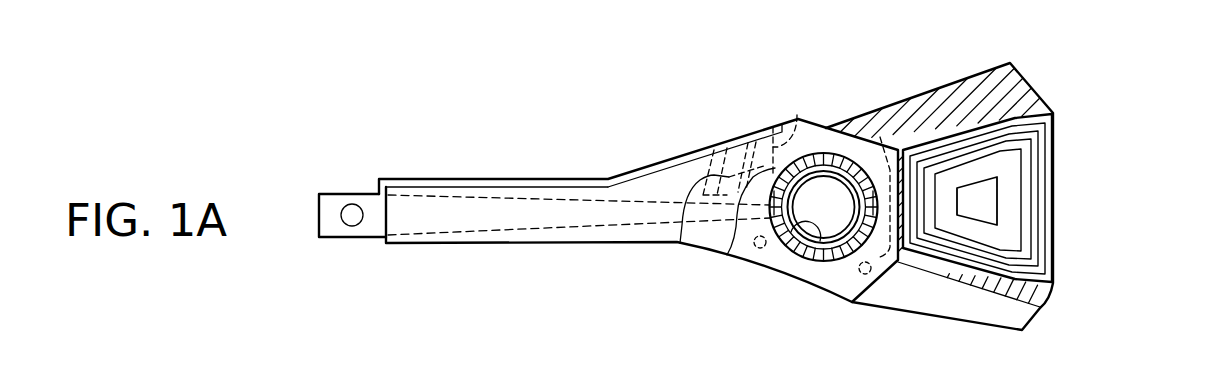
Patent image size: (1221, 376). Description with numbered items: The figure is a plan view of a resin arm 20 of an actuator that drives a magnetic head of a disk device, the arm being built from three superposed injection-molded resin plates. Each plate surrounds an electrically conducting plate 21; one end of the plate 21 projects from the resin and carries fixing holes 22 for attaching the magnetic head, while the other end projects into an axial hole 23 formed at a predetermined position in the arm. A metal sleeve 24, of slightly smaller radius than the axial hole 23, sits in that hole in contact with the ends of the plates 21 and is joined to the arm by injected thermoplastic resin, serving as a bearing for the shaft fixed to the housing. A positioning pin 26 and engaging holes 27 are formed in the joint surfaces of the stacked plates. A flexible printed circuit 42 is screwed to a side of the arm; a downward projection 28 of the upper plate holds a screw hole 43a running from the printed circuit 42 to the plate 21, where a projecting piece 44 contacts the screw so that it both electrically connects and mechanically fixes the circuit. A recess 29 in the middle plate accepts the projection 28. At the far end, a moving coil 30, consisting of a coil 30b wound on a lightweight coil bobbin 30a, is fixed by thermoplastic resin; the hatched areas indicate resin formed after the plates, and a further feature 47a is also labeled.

The resin arm 20 is at (489, 180).
The electrically conducting plate 21 is at (410, 210).
The fixing holes 22 is at (352, 226).
The axial hole 23 is at (813, 257).
The sleeve 24 is at (785, 178).
The positioning pin 26 is at (880, 137).
The engaging holes 27 is at (759, 250).
The projection 28 is at (812, 102).
The recess 29 is at (797, 115).
The moving coil 30 is at (968, 155).
The coil bobbin 30a is at (1022, 182).
The coil 30b is at (1044, 246).
The flexible printed circuit 42 is at (628, 173).
The screw hole 43a is at (680, 243).
The projecting piece 44 is at (745, 251).
The tab 47a is at (680, 370).